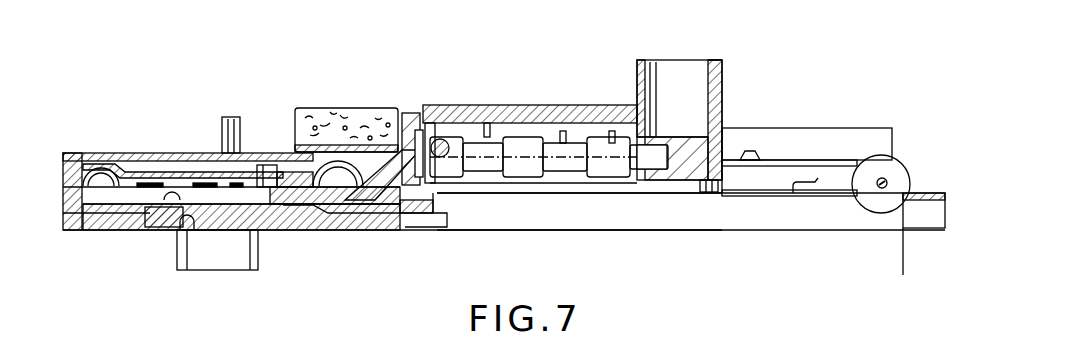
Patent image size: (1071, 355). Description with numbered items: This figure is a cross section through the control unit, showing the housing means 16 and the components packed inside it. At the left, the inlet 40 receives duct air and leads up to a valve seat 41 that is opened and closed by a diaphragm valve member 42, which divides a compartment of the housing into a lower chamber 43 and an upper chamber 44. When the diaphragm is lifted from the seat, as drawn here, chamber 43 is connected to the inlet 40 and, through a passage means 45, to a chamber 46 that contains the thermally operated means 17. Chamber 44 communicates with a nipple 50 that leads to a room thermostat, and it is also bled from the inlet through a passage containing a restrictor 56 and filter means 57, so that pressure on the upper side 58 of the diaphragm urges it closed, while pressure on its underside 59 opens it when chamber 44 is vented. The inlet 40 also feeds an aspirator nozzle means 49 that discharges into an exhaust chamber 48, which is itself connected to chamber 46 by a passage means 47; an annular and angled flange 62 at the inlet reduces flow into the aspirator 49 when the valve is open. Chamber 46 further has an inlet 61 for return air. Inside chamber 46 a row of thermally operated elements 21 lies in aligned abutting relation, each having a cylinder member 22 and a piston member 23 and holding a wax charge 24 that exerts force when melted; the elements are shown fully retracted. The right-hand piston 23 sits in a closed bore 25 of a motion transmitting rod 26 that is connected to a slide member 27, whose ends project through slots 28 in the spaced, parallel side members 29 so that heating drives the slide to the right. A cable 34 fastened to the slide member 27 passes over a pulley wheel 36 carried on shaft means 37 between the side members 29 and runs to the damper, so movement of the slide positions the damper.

The housing means 16 is at (523, 107).
The thermally operated means 17 is at (563, 138).
The thermally operated piston and cylinder element 21 is at (612, 135).
The cylinder member 22 is at (452, 180).
The piston member 23 is at (567, 167).
The wax charge 24 is at (443, 140).
The closed bore 25 is at (668, 165).
The motion transmitting rod 26 is at (725, 117).
The slide member 27 is at (735, 155).
The slots 28 is at (785, 166).
The side members 29 is at (835, 128).
The cable 34 is at (838, 155).
The pulley wheel 36 is at (897, 163).
The shaft means 37 is at (890, 183).
The inlet 40 is at (217, 253).
The valve seat 41 is at (177, 193).
The diaphragm valve member 42 is at (152, 178).
The chamber 43 is at (130, 193).
The chamber 44 is at (120, 172).
The passage means 45 is at (403, 175).
The chamber 46 is at (487, 130).
The passage means 47 is at (495, 197).
The exhaust chamber 48 is at (737, 222).
The aspirator nozzle means 49 is at (432, 220).
The nipple 50 is at (212, 138).
The restrictor 56 is at (328, 160).
The filter means 57 is at (313, 128).
The upper side 58 is at (267, 175).
The underside 59 is at (295, 187).
The inlet 61 is at (725, 65).
The annular and angled flange 62 is at (193, 227).